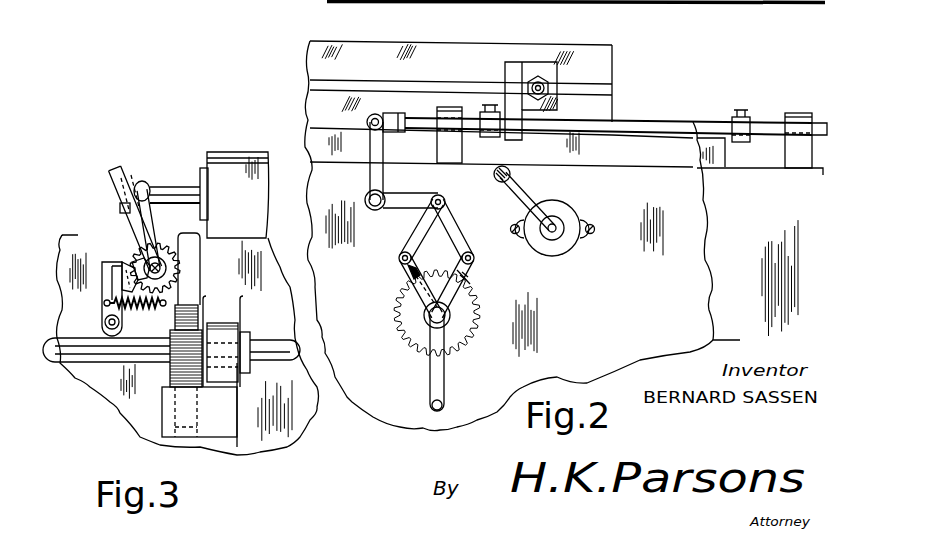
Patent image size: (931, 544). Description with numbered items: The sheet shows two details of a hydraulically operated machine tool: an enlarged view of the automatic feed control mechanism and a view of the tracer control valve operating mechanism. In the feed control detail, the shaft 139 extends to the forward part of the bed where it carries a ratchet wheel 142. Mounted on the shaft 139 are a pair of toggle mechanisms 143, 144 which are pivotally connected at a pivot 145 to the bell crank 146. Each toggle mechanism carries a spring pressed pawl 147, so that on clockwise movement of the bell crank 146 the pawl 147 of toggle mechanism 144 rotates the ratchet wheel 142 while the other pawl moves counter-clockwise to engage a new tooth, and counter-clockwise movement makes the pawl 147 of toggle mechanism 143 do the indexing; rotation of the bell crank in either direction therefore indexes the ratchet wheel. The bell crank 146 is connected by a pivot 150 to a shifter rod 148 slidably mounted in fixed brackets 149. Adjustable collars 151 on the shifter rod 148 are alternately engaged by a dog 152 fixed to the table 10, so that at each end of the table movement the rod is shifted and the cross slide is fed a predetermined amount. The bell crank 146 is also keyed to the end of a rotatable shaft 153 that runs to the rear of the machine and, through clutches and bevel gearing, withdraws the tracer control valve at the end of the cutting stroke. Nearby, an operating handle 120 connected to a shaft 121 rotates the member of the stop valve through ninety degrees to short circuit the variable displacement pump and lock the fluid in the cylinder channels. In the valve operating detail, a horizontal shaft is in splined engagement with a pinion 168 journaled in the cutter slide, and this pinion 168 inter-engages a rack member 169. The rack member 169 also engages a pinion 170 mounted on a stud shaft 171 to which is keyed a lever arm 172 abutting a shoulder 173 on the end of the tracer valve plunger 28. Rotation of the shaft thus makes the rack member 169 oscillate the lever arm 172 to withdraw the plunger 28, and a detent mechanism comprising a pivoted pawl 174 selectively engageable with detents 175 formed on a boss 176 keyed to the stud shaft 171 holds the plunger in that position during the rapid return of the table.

In FIG. 2, the table 10 is at (605, 69).
In FIG. 3, the tracer valve plunger 28 is at (190, 197).
In FIG. 2, the operating handle 120 is at (512, 188).
In FIG. 2, the shaft 121 is at (560, 222).
In FIG. 2, the shaft 139 is at (445, 330).
In FIG. 2, the ratchet wheel 142 is at (400, 320).
In FIG. 2, the toggle mechanism 143 is at (420, 232).
In FIG. 2, the toggle mechanism 144 is at (466, 246).
In FIG. 2, the pivot 145 is at (446, 204).
In FIG. 2, the bell crank 146 is at (413, 200).
In FIG. 2, the spring pressed pawl 147 is at (418, 274).
In FIG. 2, the shifter rod 148 is at (632, 120).
In FIG. 2, the fixed bracket 149 is at (452, 107).
In FIG. 2, the pivot 150 is at (378, 114).
In FIG. 2, the adjustable collar 151 is at (490, 128).
In FIG. 2, the dog 152 is at (518, 62).
In FIG. 2, the rotatable shaft 153 is at (365, 203).
In FIG. 3, the pinion 168 is at (150, 412).
In FIG. 3, the rack member 169 is at (195, 294).
In FIG. 3, the pinion 170 is at (165, 258).
In FIG. 3, the stud shaft 171 is at (145, 255).
In FIG. 3, the lever arm 172 is at (148, 182).
In FIG. 3, the shoulder 173 is at (137, 172).
In FIG. 3, the pivoted pawl 174 is at (105, 260).
In FIG. 3, the detent 175 is at (122, 270).
In FIG. 3, the boss 176 is at (135, 258).